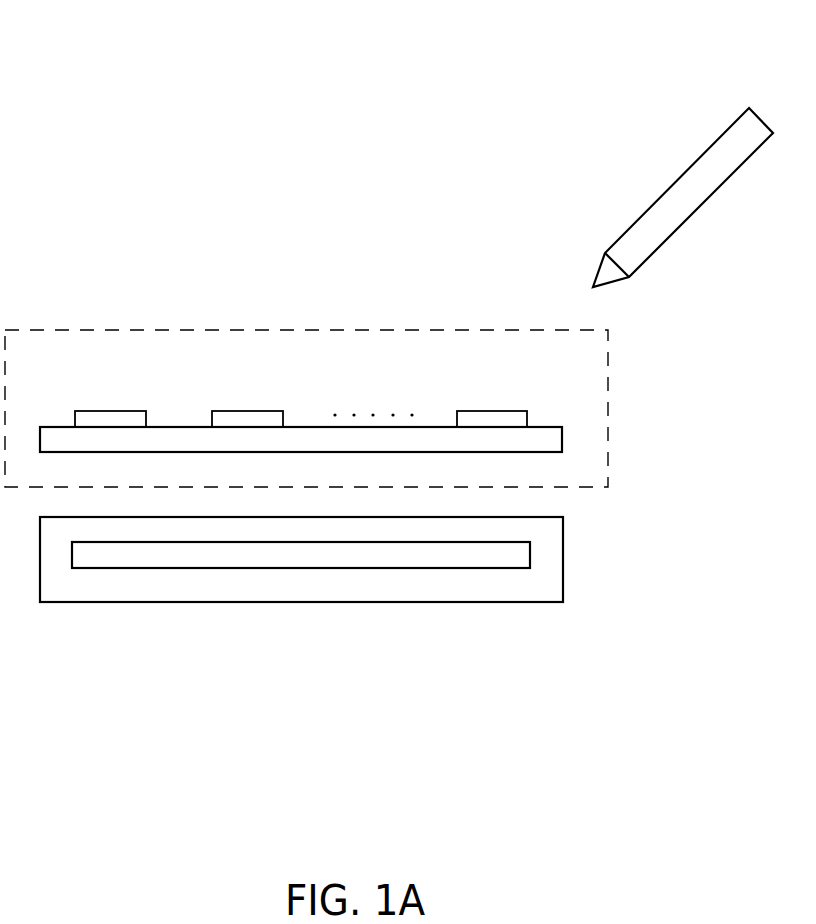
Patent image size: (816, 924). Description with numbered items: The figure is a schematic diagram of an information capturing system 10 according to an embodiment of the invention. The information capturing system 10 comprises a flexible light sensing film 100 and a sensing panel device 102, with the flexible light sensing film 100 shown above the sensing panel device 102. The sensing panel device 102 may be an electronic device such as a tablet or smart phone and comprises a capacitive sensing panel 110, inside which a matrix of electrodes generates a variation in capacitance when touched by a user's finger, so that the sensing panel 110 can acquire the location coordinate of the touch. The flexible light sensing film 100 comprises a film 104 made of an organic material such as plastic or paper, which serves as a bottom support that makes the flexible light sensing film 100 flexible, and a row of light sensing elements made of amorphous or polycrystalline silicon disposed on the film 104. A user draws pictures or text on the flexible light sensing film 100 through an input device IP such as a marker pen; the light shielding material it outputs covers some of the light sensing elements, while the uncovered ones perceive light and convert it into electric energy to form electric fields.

The information capturing system 10 is at (112, 62).
The input device IP is at (677, 198).
The flexible light sensing film 100 is at (352, 329).
The film 104 is at (562, 435).
The sensing panel device 102 is at (563, 532).
The capacitive sensing panel 110 is at (530, 558).